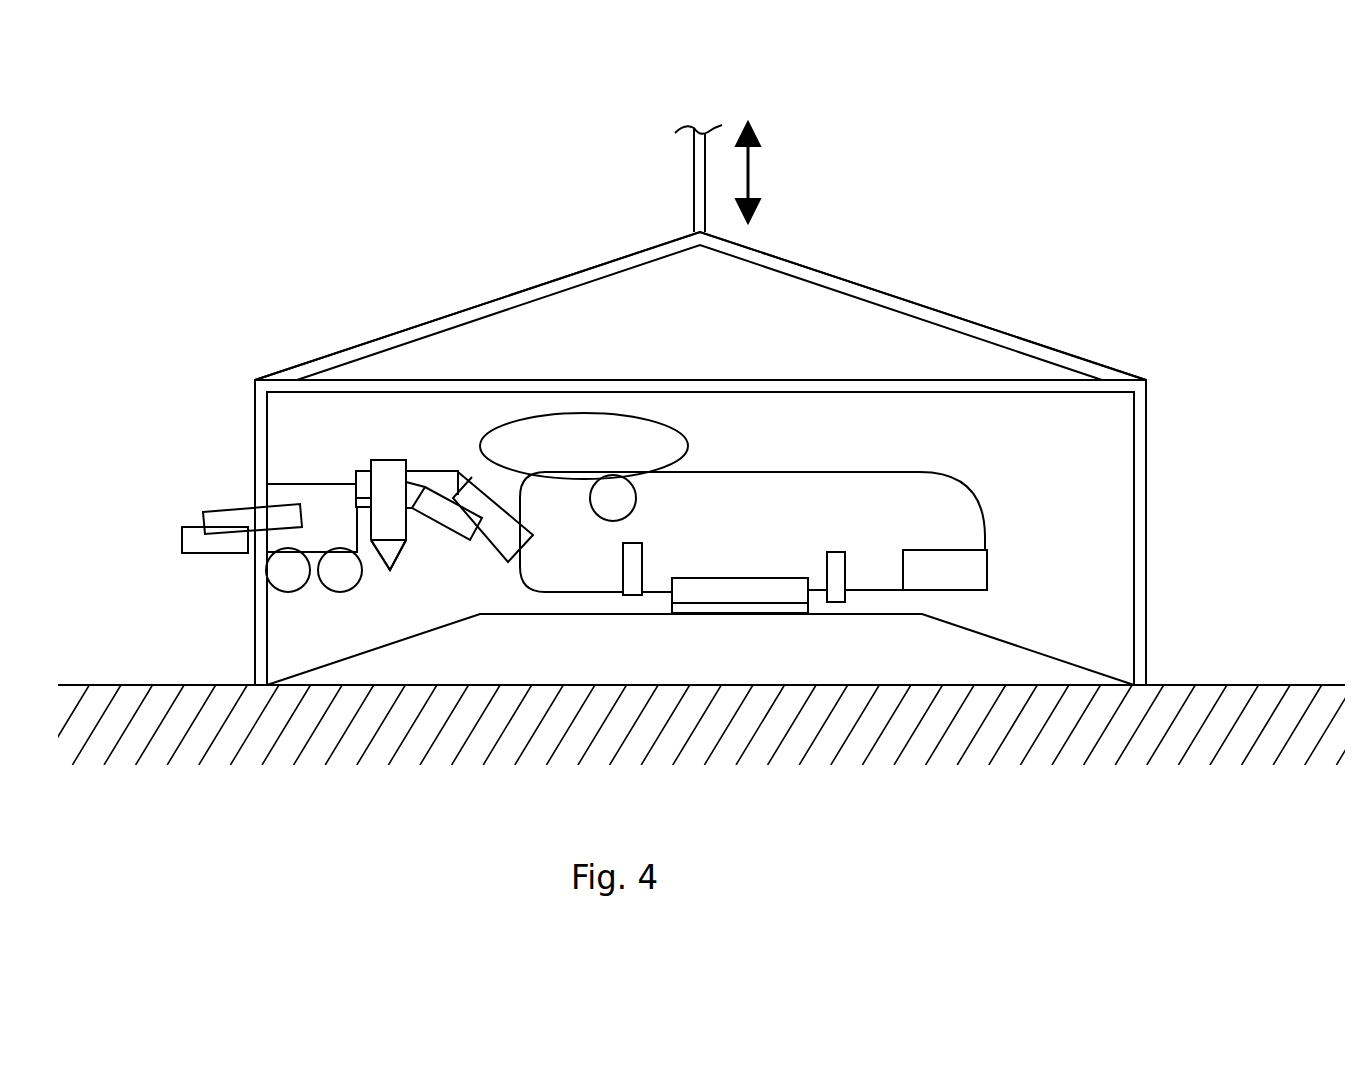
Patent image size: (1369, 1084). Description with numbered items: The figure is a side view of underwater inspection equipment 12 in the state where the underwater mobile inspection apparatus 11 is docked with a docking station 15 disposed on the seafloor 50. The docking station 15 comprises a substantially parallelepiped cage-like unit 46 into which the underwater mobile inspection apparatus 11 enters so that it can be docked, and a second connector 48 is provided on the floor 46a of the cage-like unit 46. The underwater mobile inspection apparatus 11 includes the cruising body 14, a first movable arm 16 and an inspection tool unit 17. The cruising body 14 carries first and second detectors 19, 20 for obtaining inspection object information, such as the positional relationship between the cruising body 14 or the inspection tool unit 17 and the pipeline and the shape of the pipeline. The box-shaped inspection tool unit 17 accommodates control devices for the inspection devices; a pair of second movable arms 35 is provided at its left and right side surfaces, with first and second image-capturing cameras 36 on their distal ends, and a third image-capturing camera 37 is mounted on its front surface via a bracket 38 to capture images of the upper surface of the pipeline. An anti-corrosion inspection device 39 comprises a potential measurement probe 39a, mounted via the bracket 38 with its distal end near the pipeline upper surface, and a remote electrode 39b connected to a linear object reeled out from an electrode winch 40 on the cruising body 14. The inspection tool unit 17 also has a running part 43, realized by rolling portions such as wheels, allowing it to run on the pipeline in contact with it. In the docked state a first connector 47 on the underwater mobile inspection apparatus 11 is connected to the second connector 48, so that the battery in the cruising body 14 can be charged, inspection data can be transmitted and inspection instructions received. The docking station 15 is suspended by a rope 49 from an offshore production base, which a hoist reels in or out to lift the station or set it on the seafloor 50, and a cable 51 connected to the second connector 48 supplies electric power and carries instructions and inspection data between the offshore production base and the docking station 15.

The underwater mobile inspection apparatus 11 is at (785, 405).
The underwater inspection equipment 12 is at (316, 127).
The cruising body 14 is at (775, 467).
The docking station 15 is at (734, 292).
The cage-like unit 46 is at (1076, 351).
The floor 46a is at (920, 660).
The first movable arm 16 is at (454, 467).
The inspection tool unit 17 is at (307, 479).
The first detector 19 is at (987, 568).
The second detector 20 is at (643, 567).
The second movable arms 35 is at (235, 515).
The first and second image-capturing cameras 36 is at (193, 537).
The third image-capturing camera 37 is at (443, 517).
The bracket 38 is at (365, 496).
The anti-corrosion inspection device 39 is at (404, 692).
The potential measurement probe 39a is at (384, 567).
The remote electrode 39b is at (572, 412).
The electrode winch 40 is at (637, 498).
The running part 43 is at (343, 580).
The first connector 47 is at (740, 708).
The second connector 48 is at (727, 608).
The rope 49 is at (652, 177).
The cable 51 is at (693, 167).
The seafloor 50 is at (1258, 685).